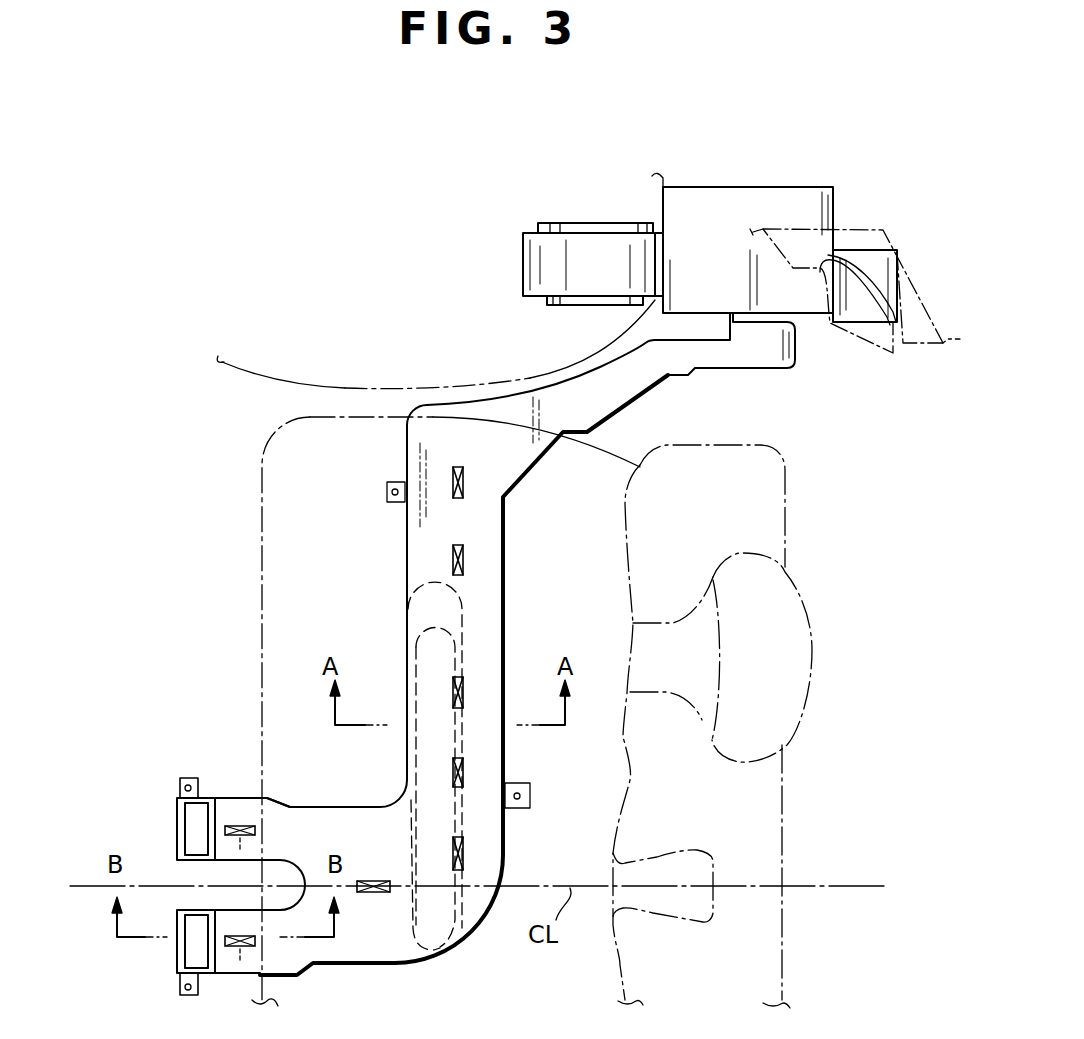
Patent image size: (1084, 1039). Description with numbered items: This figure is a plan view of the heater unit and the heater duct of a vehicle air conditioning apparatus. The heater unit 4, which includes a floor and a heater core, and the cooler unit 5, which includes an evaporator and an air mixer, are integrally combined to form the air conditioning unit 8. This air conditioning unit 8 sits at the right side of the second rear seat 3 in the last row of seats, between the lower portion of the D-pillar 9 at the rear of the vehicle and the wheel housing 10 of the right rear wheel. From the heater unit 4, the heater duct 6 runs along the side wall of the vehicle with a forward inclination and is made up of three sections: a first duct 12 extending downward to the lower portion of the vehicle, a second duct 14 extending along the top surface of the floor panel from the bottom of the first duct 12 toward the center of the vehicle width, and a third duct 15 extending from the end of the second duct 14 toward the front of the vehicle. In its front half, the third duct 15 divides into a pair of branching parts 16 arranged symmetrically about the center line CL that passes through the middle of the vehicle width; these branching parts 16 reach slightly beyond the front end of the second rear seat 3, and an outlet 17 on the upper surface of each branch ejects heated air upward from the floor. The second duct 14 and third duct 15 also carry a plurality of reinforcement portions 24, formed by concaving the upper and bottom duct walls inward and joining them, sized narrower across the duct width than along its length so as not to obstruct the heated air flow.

The second rear seat 3 is at (256, 566).
The heater unit 4 is at (590, 232).
The cooler unit 5 is at (853, 250).
The heater duct 6 is at (392, 552).
The air conditioning unit 8 is at (738, 180).
The D-pillar 9 is at (917, 270).
The wheel housing 10 is at (288, 380).
The first duct 12 is at (738, 358).
The second duct 14 is at (505, 568).
The third duct 15 is at (388, 953).
The branching parts 16 is at (233, 797).
The outlet 17 is at (188, 927).
The reinforcement portions 24 is at (463, 770).